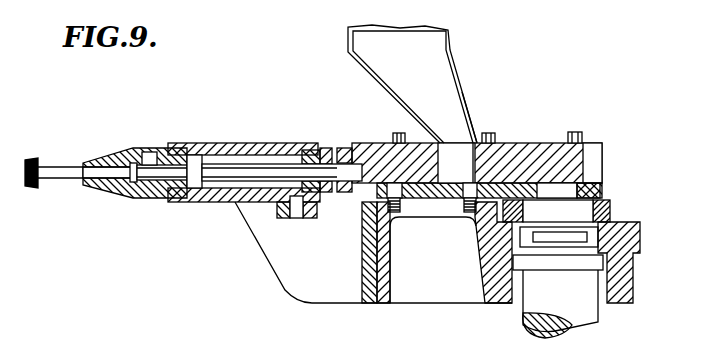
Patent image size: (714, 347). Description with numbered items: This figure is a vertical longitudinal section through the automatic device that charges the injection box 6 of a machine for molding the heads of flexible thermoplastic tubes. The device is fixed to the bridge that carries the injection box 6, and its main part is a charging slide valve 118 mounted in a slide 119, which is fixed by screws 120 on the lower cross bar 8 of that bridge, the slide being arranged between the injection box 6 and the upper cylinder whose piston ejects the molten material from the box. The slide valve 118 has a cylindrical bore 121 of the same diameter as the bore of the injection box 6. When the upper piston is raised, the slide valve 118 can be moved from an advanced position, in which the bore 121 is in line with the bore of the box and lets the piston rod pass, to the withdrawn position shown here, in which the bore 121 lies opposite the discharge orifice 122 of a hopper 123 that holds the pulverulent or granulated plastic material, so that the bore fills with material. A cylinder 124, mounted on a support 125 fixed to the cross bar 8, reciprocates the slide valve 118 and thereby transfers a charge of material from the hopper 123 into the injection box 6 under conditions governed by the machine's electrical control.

The injection box 6 is at (528, 313).
The lower cross bar 8 is at (437, 293).
The charging slide valve 118 is at (527, 148).
The slide 119 is at (595, 178).
The screws 120 is at (389, 184).
The cylindrical bore 121 is at (482, 147).
The discharge orifice 122 is at (470, 113).
The hopper 123 is at (362, 40).
The cylinder 124 is at (302, 143).
The support 125 is at (283, 278).